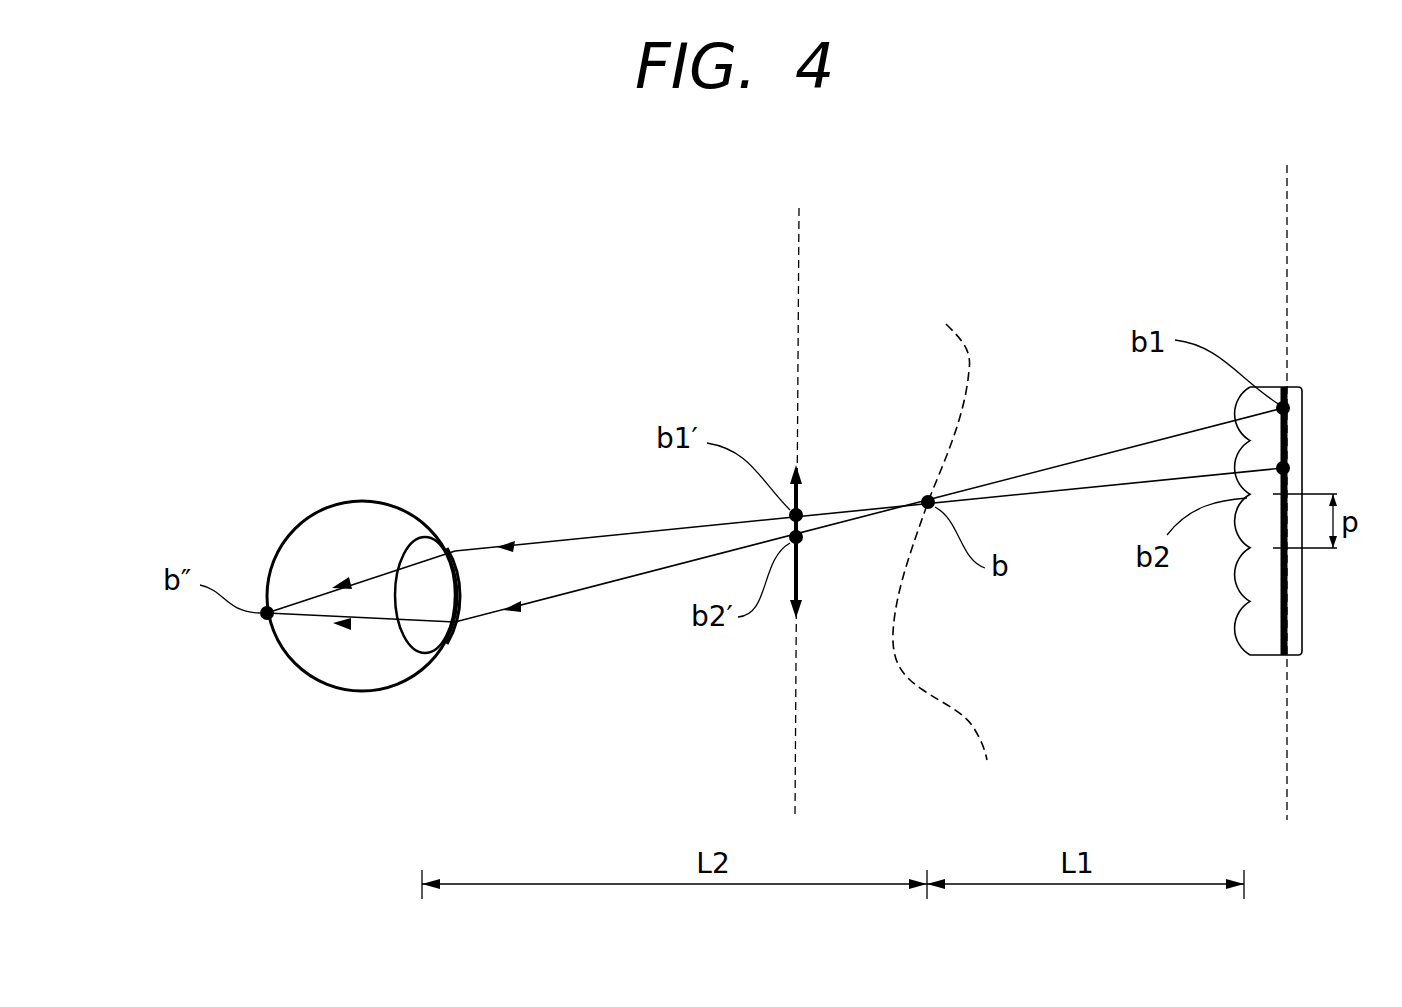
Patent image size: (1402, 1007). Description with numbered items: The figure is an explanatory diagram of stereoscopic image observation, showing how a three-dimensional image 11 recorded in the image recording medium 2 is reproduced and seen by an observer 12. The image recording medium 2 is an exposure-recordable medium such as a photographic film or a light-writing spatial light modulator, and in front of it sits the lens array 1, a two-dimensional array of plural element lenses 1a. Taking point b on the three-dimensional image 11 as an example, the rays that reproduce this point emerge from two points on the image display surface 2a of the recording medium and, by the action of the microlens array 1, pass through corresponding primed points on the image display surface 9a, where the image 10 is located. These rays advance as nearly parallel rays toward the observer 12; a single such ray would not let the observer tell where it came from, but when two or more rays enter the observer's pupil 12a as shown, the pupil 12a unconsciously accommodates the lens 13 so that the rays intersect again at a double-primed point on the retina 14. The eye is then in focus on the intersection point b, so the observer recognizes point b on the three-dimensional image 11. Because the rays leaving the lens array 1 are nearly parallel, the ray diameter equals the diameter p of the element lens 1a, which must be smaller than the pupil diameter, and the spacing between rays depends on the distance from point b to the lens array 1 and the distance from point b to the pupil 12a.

The lens array 1 is at (1254, 544).
The element lens 1a is at (1247, 623).
The image recording medium 2 is at (1297, 422).
The image display surface 2a is at (1288, 255).
The image display surface 9a is at (799, 299).
The image 10 is at (798, 570).
The three-dimensional image 11 is at (968, 349).
The observer 12 is at (385, 509).
The pupil 12a is at (462, 577).
The lens 13 is at (412, 547).
The retina 14 is at (295, 527).